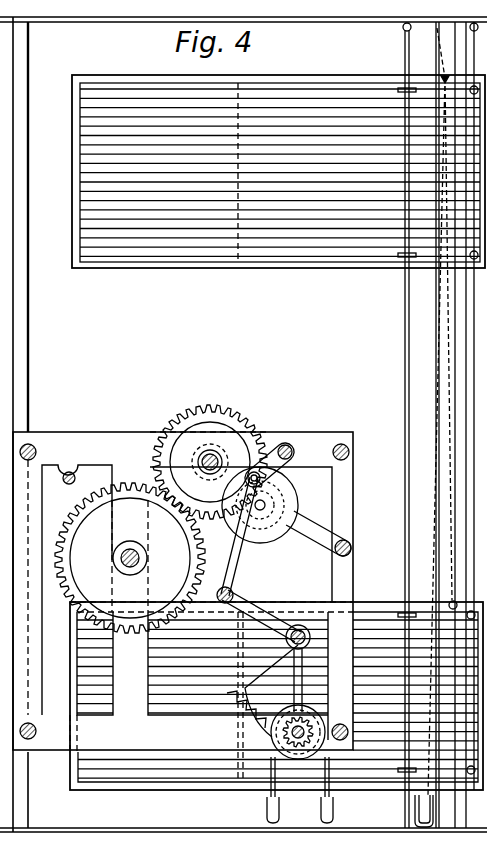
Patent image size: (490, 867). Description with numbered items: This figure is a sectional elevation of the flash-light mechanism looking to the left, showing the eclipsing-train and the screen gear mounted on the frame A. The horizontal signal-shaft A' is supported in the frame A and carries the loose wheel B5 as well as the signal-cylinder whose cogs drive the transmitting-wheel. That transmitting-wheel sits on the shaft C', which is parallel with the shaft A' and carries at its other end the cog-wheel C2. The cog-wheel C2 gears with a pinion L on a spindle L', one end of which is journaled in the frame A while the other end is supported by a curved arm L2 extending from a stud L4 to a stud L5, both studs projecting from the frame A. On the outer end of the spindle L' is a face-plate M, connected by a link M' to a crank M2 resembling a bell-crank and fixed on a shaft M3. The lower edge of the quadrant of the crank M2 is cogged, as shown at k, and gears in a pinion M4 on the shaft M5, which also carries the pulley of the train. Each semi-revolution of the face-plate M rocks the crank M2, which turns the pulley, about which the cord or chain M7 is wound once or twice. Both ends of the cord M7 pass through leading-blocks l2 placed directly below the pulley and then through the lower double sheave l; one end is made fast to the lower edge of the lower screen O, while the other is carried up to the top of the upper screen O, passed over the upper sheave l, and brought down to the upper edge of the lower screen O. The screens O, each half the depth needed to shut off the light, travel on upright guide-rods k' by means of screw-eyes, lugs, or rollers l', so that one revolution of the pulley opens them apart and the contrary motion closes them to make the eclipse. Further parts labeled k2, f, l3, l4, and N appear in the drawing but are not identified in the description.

The frame A is at (183, 580).
The horizontal shaft A' is at (143, 558).
The loose wheel B5 is at (130, 558).
The shaft C' is at (202, 462).
The cog-wheel C2 is at (210, 455).
The pinion L is at (276, 480).
The spindle L' is at (284, 491).
The curved arm L2 is at (318, 533).
The stud L4 is at (296, 452).
The stud L5 is at (352, 548).
The face-plate M is at (260, 505).
The link M' is at (239, 536).
The crank M2 is at (259, 614).
The shaft M3 is at (306, 637).
The pinion M4 is at (332, 728).
The shaft M5 is at (300, 764).
The cord or chain M7 is at (446, 411).
The screens O is at (277, 432).
The cogged edge k is at (355, 538).
The guide-rods k' is at (396, 377).
The rod k2 is at (5, 351).
The frame f is at (8, 396).
The double sheave or pulley l is at (403, 425).
The screw-eyes, lugs, or rollers l' is at (462, 425).
The leading-blocks l2 is at (299, 799).
The eye l3 is at (454, 610).
The eye l4 is at (470, 93).
The hook N is at (433, 811).